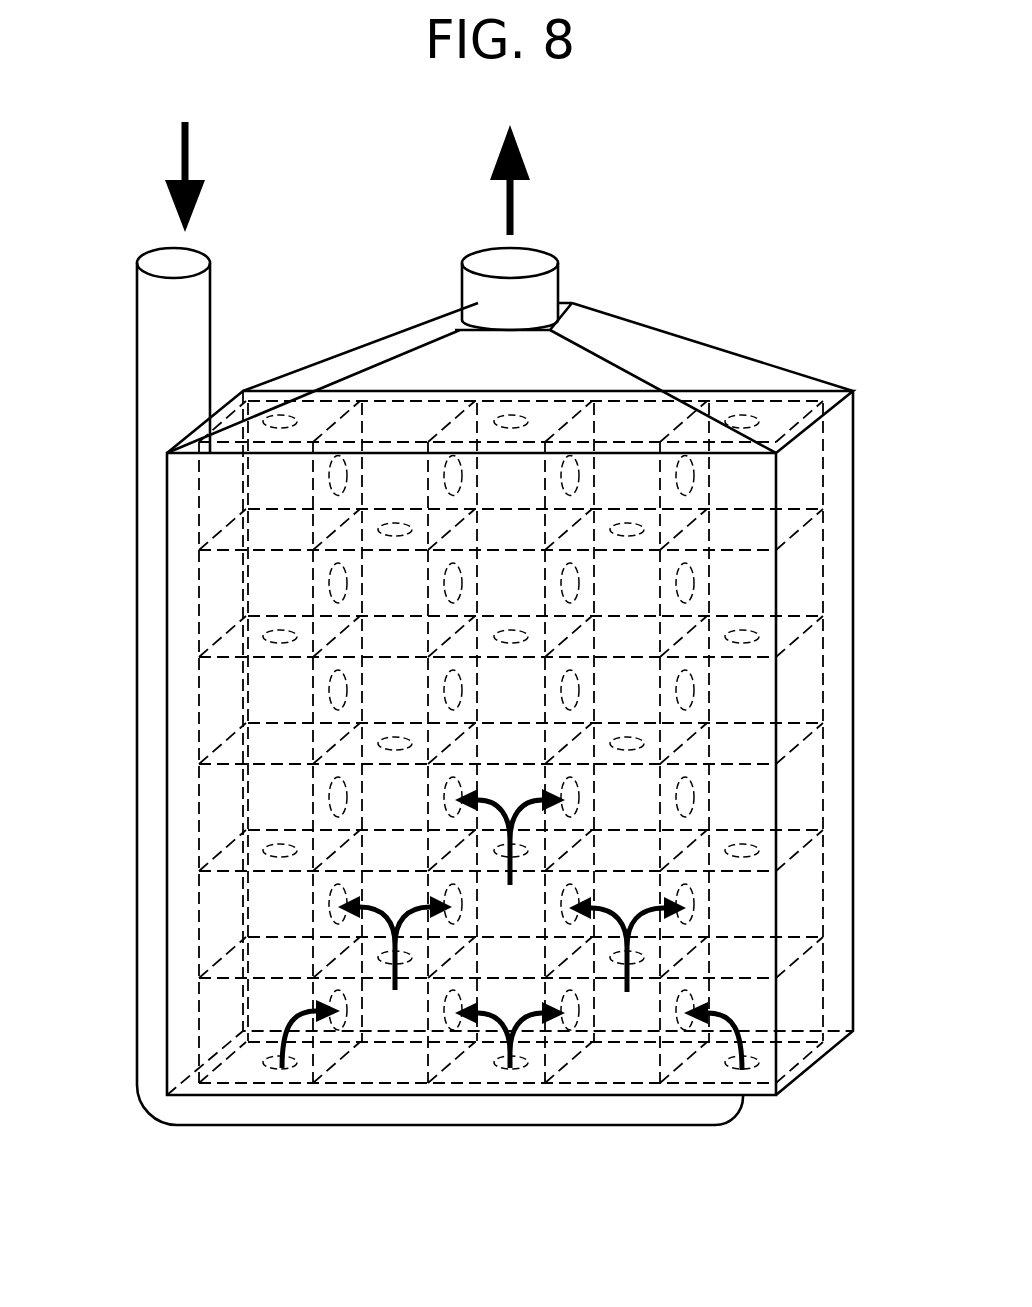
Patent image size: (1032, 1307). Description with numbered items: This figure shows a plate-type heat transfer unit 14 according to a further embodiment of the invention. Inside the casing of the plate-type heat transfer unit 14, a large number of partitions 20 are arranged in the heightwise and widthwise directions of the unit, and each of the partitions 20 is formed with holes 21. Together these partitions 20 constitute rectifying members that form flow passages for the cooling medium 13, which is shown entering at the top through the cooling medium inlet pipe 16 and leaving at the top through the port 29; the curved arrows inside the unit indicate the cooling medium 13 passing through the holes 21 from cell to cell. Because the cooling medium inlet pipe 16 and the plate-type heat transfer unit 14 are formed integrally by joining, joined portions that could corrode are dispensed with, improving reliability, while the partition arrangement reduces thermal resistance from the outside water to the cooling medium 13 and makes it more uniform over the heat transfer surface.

The cooling medium 13 is at (350, 178).
The plate-type heat transfer unit 14 is at (836, 917).
The cooling medium inlet pipe 16 is at (148, 365).
The partitions 20 is at (573, 430).
The holes 21 is at (704, 685).
The outlet port 29 is at (560, 287).